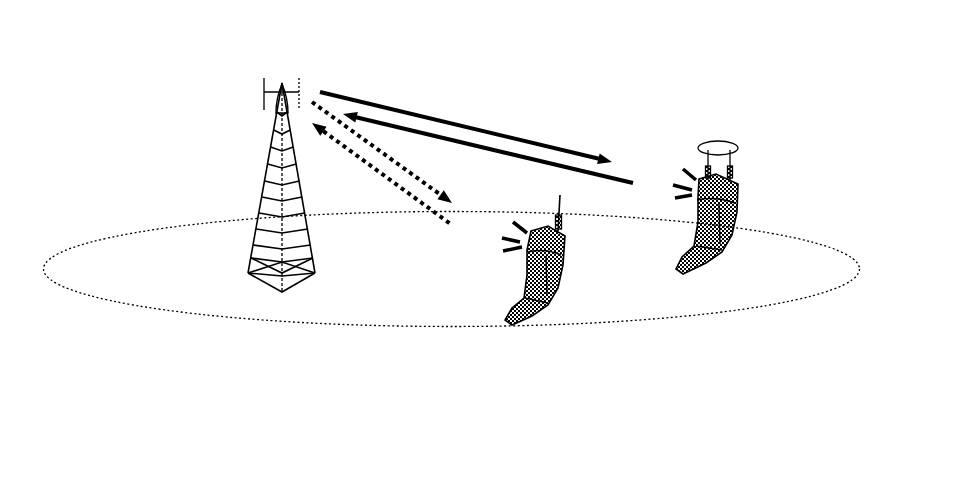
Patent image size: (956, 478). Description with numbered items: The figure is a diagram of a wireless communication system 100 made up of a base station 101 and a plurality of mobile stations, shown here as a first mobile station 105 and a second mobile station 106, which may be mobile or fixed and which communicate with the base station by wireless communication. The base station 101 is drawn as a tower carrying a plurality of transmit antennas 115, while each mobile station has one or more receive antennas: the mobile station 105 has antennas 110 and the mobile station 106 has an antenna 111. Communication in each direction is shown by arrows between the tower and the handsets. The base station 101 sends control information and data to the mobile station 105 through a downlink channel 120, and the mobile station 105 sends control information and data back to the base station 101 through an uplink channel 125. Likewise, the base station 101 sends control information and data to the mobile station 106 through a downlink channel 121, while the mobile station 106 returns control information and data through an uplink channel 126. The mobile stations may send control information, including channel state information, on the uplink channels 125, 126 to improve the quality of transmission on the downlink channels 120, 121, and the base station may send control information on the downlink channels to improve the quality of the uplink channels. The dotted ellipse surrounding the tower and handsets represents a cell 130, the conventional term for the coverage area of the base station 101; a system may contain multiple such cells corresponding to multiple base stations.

The wireless communication system 100 is at (131, 68).
The base station 101 is at (248, 268).
The mobile station 105 is at (747, 195).
The mobile station 106 is at (568, 248).
The antennas 110 is at (720, 139).
The antenna 111 is at (561, 206).
The transmit antennas 115 is at (264, 86).
The downlink channel 120 is at (468, 118).
The downlink channel 121 is at (422, 178).
The uplink channel 125 is at (483, 154).
The uplink channel 126 is at (377, 180).
The cell 130 is at (415, 318).